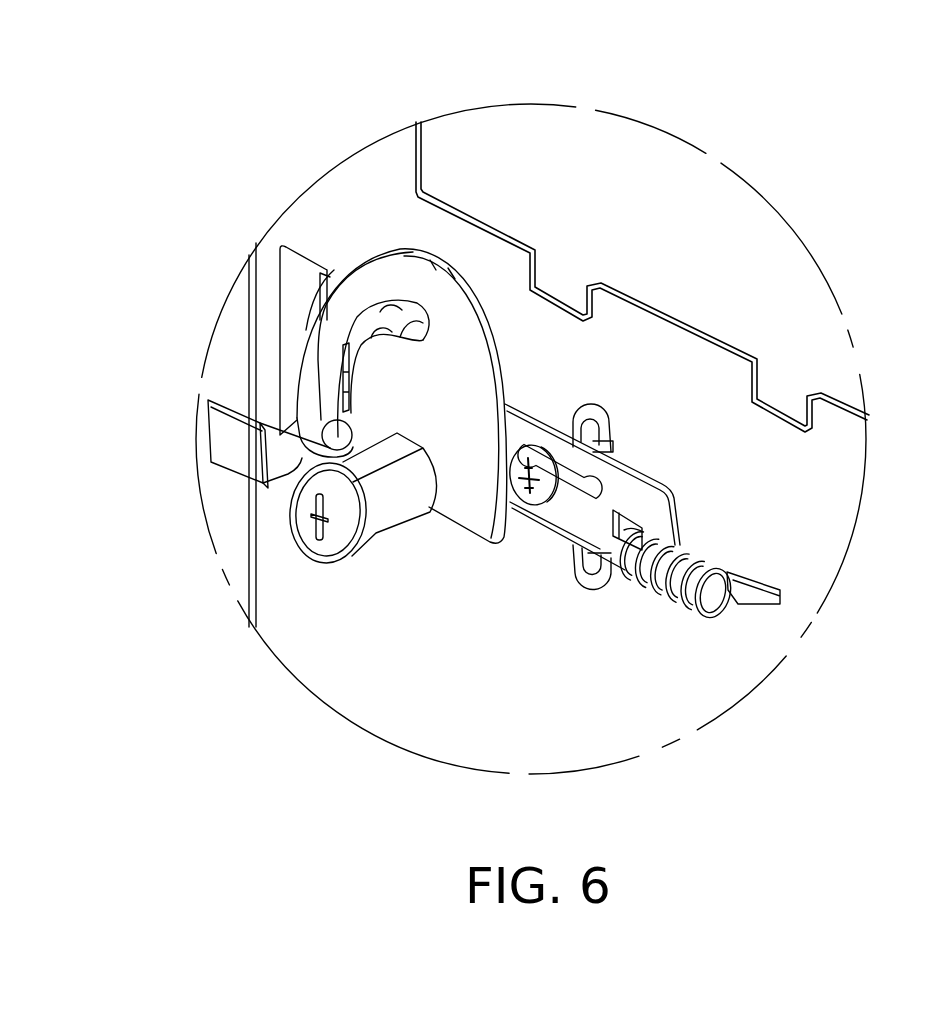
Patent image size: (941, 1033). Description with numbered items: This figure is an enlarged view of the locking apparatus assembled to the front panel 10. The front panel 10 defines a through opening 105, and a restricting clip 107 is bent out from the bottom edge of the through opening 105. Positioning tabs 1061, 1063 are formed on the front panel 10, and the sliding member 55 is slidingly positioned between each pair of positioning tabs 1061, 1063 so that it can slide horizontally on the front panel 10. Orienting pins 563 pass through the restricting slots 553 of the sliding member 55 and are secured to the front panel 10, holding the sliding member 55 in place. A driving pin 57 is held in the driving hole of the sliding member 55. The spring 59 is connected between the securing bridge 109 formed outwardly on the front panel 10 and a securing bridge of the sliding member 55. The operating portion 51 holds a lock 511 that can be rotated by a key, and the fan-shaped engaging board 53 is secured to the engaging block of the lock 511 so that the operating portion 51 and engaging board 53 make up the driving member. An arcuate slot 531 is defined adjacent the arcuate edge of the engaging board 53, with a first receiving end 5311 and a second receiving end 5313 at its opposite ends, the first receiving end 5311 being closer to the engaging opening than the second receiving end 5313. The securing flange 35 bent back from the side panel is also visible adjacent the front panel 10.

The front panel 10 is at (828, 430).
The through opening 105 is at (300, 297).
The securing flange 35 is at (327, 270).
The restricting clip 107 is at (226, 443).
The first receiving end 5311 is at (333, 450).
The engaging board 53 is at (470, 495).
The slot 531 is at (370, 323).
The second receiving end 5313 is at (423, 323).
The positioning tab 1063 is at (392, 313).
The driving pin 57 is at (333, 433).
The operating portion 51 is at (387, 510).
The lock 511 is at (307, 512).
The sliding member 55 is at (657, 512).
The restricting slot 553 is at (570, 495).
The orienting pin 563 is at (527, 493).
The positioning tab 1061 is at (600, 425).
The spring 59 is at (710, 620).
The securing bridge 109 is at (763, 600).